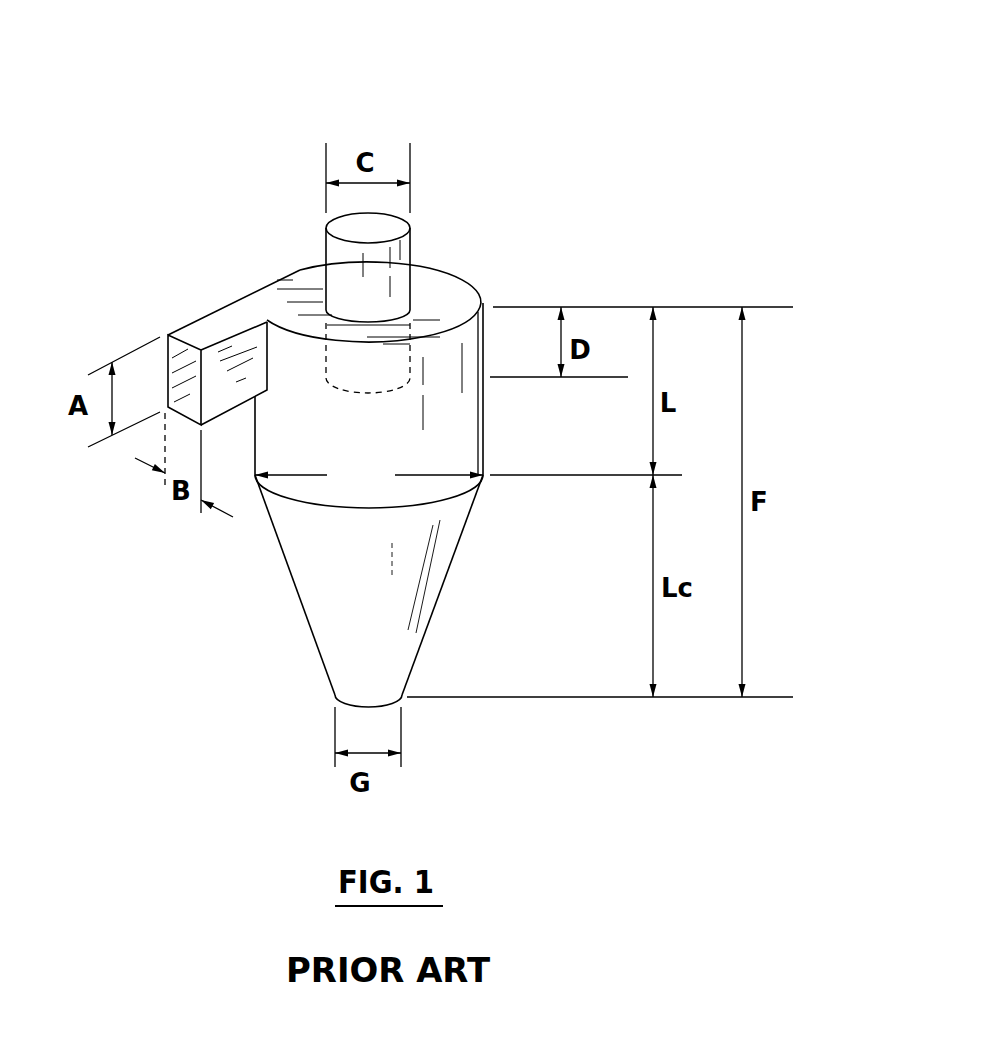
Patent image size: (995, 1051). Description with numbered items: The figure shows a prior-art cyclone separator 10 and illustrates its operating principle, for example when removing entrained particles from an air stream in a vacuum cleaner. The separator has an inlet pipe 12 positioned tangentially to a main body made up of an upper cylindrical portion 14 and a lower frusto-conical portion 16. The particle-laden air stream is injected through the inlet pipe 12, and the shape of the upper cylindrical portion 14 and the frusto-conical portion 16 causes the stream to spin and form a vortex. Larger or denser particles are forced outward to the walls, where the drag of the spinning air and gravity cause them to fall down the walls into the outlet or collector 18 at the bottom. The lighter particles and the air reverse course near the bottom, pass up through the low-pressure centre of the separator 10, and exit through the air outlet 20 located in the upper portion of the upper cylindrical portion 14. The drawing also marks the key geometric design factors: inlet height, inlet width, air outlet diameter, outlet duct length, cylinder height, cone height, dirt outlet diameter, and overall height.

The cyclone separator 10 is at (560, 110).
The inlet pipe 12 is at (156, 326).
The upper cylindrical portion 14 is at (420, 430).
The lower frusto-conical portion 16 is at (397, 569).
The outlet or collector 18 is at (370, 709).
The air outlet 20 is at (400, 255).